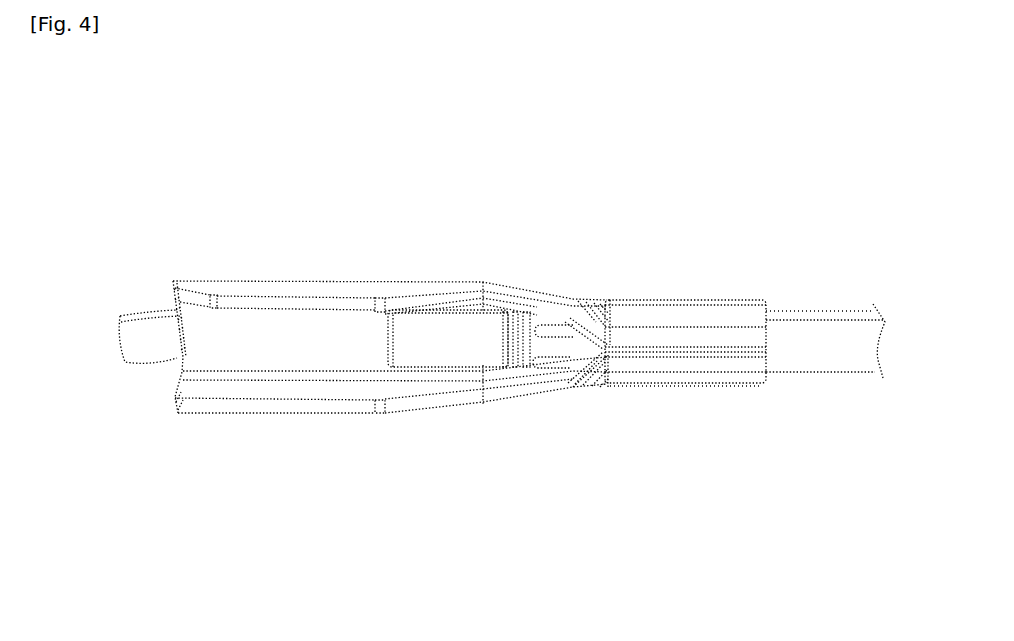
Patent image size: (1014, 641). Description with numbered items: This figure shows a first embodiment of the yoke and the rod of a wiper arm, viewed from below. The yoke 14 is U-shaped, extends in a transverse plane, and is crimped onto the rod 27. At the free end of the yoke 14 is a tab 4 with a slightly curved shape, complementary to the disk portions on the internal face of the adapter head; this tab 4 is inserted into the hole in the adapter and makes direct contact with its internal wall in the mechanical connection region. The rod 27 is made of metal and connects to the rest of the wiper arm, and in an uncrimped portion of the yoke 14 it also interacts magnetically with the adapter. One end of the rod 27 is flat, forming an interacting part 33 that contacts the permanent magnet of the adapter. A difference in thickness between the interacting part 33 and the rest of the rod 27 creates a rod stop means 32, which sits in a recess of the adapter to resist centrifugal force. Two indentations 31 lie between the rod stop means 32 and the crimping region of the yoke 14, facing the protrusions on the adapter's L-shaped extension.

The tab 4 is at (133, 329).
The yoke 14 is at (384, 248).
The rod 27 is at (857, 338).
The indentations 31 is at (550, 362).
The rod stop means 32 is at (524, 347).
The interacting part 33 is at (447, 347).